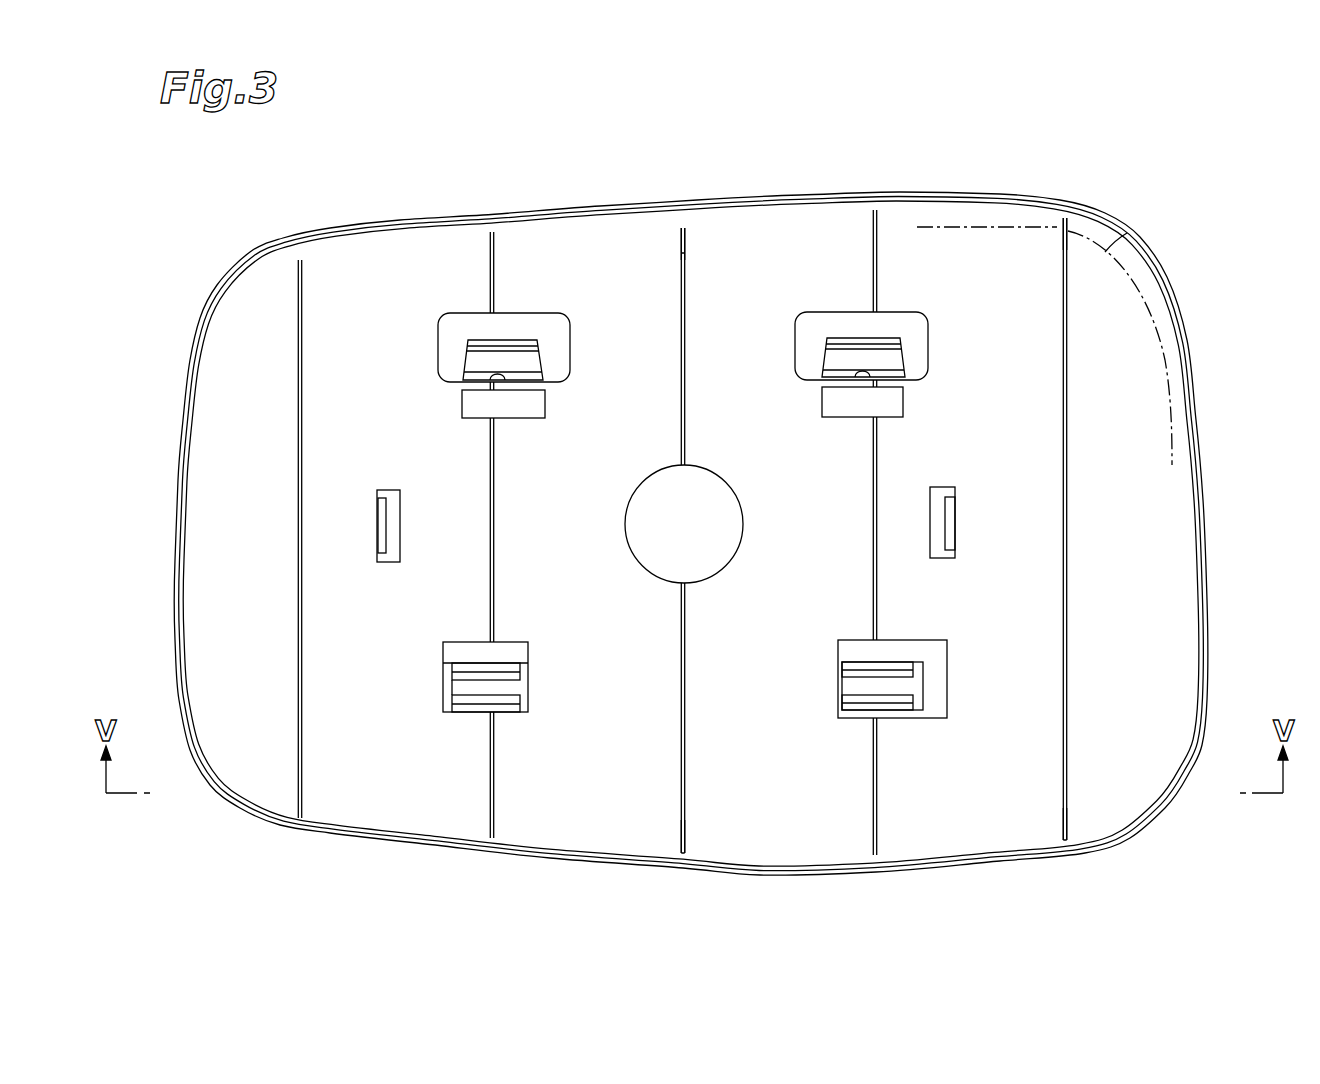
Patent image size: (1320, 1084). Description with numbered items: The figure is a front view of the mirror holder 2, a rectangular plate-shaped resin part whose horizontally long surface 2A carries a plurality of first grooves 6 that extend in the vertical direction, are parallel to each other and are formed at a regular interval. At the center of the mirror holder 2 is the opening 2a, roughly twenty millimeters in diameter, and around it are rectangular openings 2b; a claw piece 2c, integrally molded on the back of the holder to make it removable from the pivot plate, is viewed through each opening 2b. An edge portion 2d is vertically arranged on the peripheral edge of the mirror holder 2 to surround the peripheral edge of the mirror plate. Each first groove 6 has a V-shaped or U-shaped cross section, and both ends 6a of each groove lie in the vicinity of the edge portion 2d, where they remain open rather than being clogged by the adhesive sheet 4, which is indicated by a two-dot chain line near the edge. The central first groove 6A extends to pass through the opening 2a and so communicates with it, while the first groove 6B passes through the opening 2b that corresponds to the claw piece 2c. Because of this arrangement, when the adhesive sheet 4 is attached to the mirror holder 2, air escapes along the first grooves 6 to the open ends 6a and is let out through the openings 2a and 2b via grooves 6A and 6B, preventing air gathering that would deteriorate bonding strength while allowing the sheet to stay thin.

The mirror holder 2 is at (440, 204).
The surface 2A is at (1163, 630).
The opening 2a is at (720, 520).
The rectangular openings 2b is at (541, 328).
The claw piece 2c is at (958, 521).
The edge portion 2d is at (1200, 443).
The adhesive sheet 4 is at (1130, 233).
The first grooves 6 is at (1068, 680).
The first groove 6A is at (686, 392).
The first groove 6B is at (878, 765).
The both ends 6a is at (683, 229).